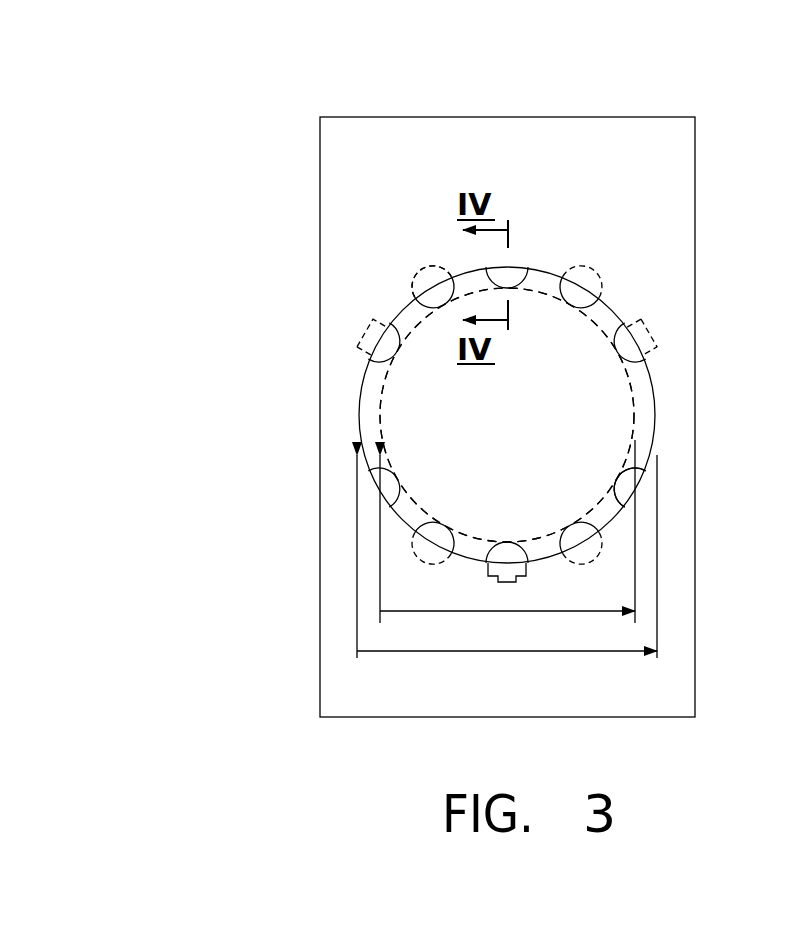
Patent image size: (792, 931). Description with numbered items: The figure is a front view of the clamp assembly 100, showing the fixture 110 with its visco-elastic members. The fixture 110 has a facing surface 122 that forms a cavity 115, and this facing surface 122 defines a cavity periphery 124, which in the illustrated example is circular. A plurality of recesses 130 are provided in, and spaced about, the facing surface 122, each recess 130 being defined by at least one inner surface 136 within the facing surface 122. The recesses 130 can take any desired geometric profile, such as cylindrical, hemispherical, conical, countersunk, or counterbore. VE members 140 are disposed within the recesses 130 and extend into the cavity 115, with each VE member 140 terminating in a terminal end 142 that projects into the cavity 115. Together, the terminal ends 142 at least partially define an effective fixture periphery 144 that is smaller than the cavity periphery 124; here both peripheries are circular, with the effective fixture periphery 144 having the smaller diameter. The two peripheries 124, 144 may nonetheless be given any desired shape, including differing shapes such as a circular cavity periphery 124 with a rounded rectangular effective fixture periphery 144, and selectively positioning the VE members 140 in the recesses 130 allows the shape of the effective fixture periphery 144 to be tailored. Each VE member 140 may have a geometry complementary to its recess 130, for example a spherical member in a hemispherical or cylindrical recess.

The clamp assembly 100 is at (449, 377).
The fixture 110 is at (600, 150).
The cavity 115 is at (530, 413).
The facing surface 122 is at (363, 372).
The cavity periphery 124 is at (655, 440).
The recess 130 is at (595, 275).
The inner surface 136 is at (410, 272).
The VE member 140 is at (618, 346).
The terminal end 142 is at (623, 485).
The effective fixture periphery 144 is at (634, 403).